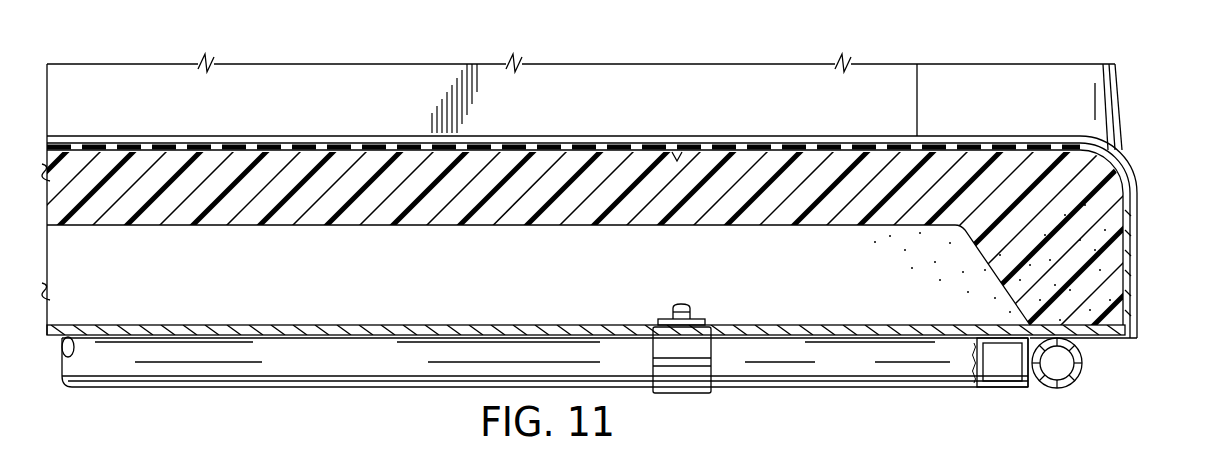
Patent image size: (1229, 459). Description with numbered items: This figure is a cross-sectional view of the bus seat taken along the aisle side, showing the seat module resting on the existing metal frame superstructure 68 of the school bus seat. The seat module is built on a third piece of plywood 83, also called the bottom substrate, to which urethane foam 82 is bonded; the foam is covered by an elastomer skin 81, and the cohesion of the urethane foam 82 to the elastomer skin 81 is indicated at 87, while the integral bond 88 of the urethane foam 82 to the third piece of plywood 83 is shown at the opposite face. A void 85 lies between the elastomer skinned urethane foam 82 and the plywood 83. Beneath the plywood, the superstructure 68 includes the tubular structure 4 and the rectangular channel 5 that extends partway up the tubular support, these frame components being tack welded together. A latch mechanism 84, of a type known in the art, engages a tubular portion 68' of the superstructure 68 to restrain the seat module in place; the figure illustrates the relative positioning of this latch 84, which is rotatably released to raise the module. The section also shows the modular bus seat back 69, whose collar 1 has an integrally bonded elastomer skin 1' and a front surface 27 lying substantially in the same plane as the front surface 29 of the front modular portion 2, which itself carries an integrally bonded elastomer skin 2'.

The collar 1 is at (1065, 61).
The integrally bonded elastomer skin 1' is at (966, 41).
The front modular portion 2 is at (876, 70).
The integrally bonded elastomer skin 2' is at (591, 40).
The tubular structure 4 is at (1077, 351).
The rectangular channel 5 is at (998, 387).
The front surface 27 is at (1072, 73).
The front surface 29 is at (325, 75).
The superstructure 68 is at (1111, 372).
The tubular portion 68' is at (886, 393).
The modular bus seat back 69 is at (192, 52).
The elastomer skin 81 is at (493, 147).
The urethane foam 82 is at (590, 182).
The third piece of plywood 83 is at (430, 330).
The latch mechanism 84 is at (700, 392).
The void 85 is at (312, 307).
The cohesion of the urethane foam to the elastomer skin 87 is at (677, 160).
The integral bond of the urethane foam to the plywood 88 is at (1113, 315).